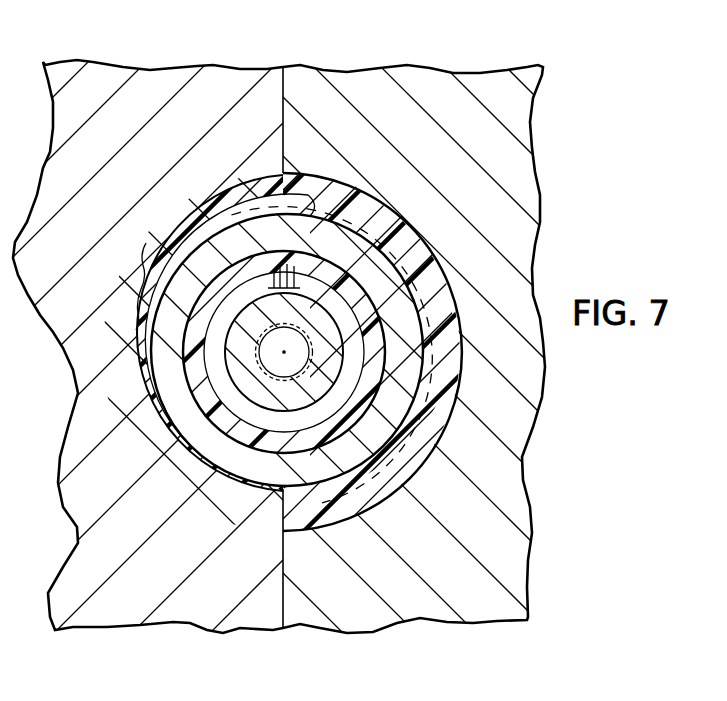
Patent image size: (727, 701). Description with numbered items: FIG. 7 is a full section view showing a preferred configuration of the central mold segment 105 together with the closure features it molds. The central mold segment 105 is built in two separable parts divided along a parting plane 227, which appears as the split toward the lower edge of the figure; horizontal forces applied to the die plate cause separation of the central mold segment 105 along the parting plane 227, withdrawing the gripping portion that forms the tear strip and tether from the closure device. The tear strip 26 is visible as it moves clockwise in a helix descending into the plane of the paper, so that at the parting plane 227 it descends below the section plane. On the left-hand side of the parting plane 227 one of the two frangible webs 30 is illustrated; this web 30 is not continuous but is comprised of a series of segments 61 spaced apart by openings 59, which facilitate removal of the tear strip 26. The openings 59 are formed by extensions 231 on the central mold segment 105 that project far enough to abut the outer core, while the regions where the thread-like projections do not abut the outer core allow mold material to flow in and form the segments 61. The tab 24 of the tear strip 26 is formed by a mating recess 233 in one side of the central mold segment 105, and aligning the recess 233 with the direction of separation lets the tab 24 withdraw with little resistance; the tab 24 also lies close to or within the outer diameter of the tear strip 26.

The parting plane 227 is at (287, 78).
The tab 24 is at (306, 186).
The tear strip 26 is at (388, 216).
The recess 233 is at (185, 203).
The extensions 231 is at (248, 228).
The frangible web 30 is at (192, 222).
The segments 61 is at (176, 244).
The openings 59 is at (283, 491).
The central mold segment 105 is at (302, 629).